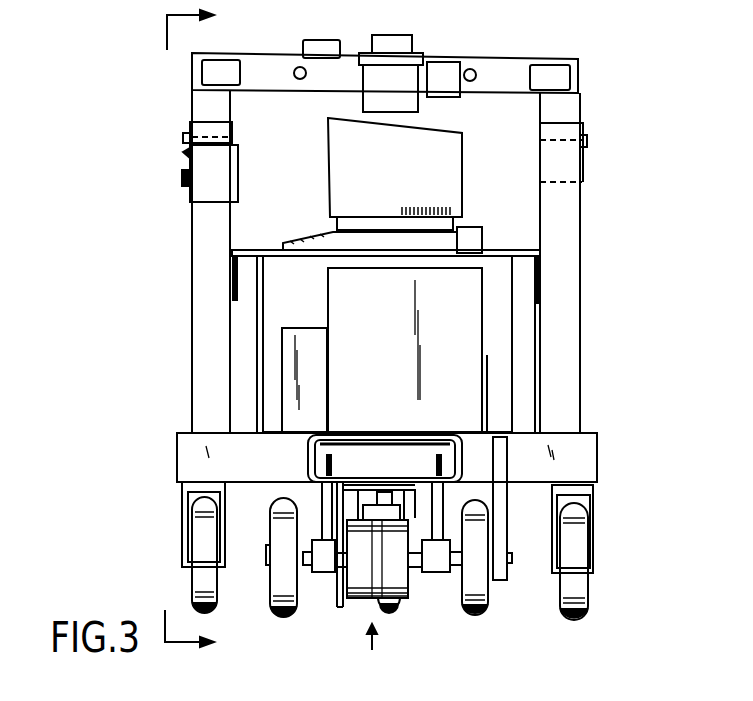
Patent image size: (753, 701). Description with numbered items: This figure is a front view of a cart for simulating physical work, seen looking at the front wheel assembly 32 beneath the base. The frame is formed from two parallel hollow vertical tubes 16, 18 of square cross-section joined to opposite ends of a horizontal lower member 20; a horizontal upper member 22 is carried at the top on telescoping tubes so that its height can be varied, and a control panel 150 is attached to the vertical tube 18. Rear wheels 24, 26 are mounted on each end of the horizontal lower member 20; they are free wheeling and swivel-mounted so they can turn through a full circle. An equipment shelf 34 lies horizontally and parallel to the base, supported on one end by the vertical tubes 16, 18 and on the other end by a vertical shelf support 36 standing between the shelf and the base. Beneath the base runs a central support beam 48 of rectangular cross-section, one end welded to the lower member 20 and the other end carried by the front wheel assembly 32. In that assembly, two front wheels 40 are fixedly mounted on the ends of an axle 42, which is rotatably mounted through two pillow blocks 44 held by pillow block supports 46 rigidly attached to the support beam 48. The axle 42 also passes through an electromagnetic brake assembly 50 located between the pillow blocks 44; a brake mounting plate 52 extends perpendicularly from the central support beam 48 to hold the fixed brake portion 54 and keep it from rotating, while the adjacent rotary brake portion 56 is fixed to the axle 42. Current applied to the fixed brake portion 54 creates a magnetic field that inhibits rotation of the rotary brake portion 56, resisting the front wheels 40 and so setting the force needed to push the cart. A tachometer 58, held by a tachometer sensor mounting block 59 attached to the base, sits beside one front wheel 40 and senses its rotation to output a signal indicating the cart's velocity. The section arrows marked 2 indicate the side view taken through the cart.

The section line 2- 2 is at (198, 332).
The vertical tube 16 is at (582, 306).
The vertical tube 18 is at (191, 310).
The horizontal lower member 20 is at (592, 460).
The horizontal upper member 22 is at (506, 66).
The rear wheel 24 is at (577, 583).
The rear wheel 26 is at (200, 572).
The front two-wheel assembly 32 is at (372, 650).
The equipment shelf 34 is at (488, 252).
The vertical shelf support 36 is at (513, 352).
The front wheel 40 is at (283, 617).
The axle 42 is at (303, 567).
The pillow block 44 is at (322, 572).
The pillow block support 46 is at (318, 498).
The central support beam 48 is at (282, 441).
The electromagnetic brake assembly 50 is at (412, 590).
The brake mounting plate 52 is at (340, 607).
The fixed brake portion 54 is at (367, 600).
The rotary brake portion 56 is at (405, 597).
The tachometer 58 is at (512, 560).
The tachometer sensor mounting block 59 is at (500, 523).
The control panel 150 is at (183, 190).